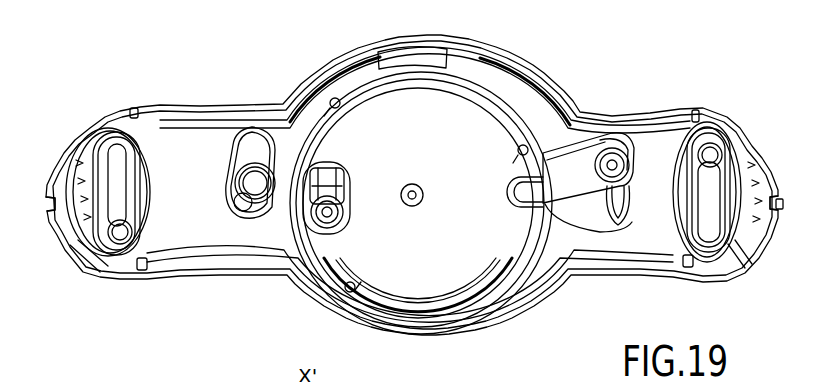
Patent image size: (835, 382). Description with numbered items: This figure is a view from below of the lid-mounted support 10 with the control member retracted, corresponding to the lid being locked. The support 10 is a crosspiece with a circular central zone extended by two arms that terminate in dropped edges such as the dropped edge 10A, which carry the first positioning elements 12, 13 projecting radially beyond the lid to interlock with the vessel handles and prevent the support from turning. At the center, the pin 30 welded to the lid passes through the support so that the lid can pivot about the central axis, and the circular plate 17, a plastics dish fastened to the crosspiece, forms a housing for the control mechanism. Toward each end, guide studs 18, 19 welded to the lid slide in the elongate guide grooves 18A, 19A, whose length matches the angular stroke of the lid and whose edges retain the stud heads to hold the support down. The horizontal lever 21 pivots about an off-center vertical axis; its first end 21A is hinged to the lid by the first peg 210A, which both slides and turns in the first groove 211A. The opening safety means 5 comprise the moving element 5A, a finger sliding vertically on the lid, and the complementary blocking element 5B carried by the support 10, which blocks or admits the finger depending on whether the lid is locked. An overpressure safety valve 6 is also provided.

The opening safety means 5 is at (217, 185).
The moving element 5A is at (245, 212).
The complementary blocking element 5B is at (237, 143).
The overpressure safety valve 6 is at (318, 224).
The support 10 is at (577, 113).
The dropped edge 10A is at (766, 164).
The first positioning element 12 is at (782, 218).
The first positioning element 13 is at (40, 222).
The plate 17 is at (483, 240).
The guide stud 18 is at (732, 130).
The elongate guide groove 18A is at (708, 238).
The guide stud 19 is at (120, 241).
The elongate guide groove 19A is at (118, 160).
The horizontal lever 21 is at (609, 142).
The first end 21A is at (640, 134).
The pin 30 is at (423, 193).
The first peg 210A is at (624, 235).
The first groove 211A is at (609, 234).